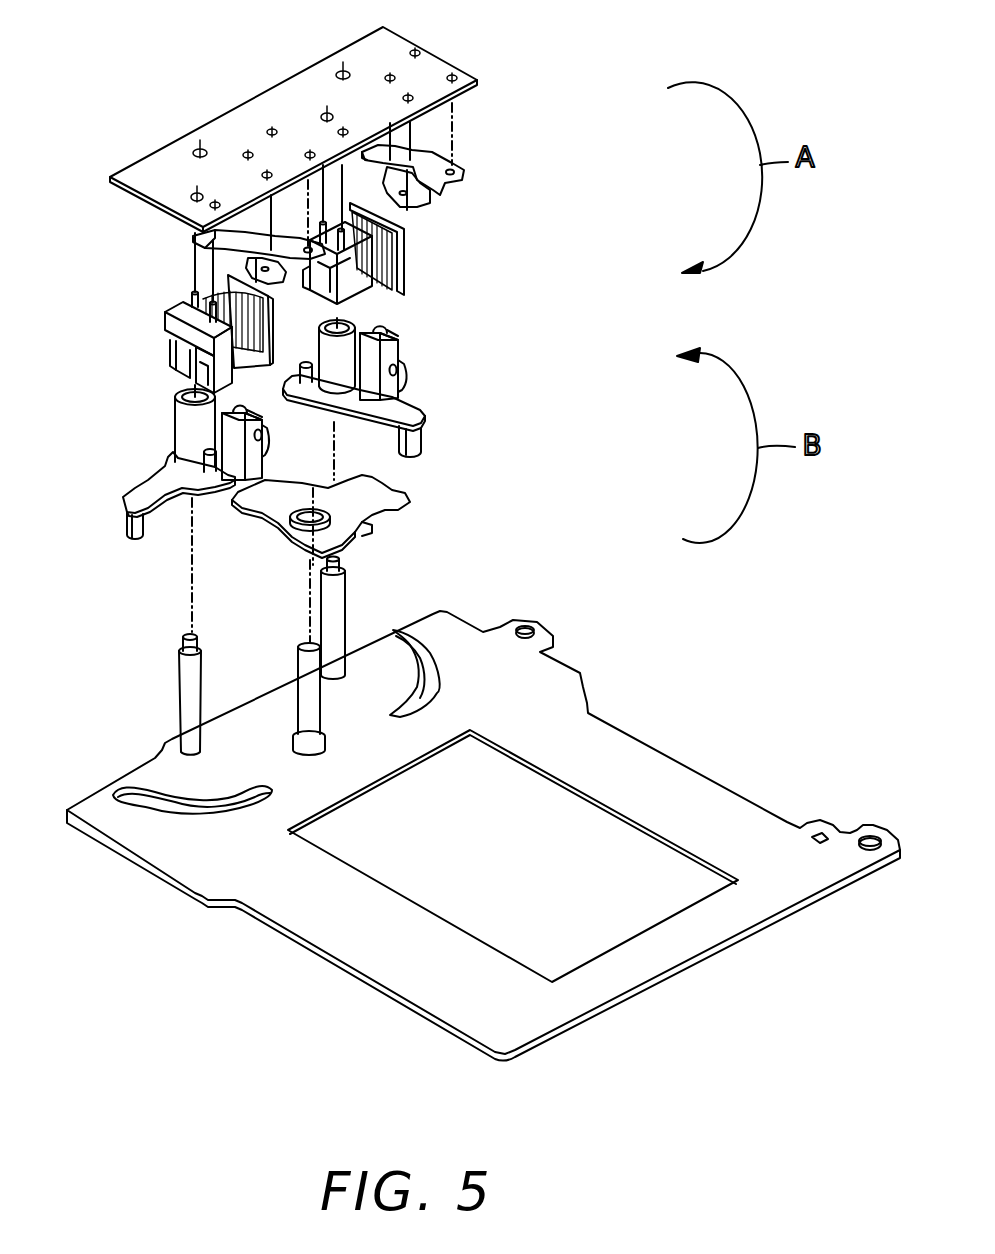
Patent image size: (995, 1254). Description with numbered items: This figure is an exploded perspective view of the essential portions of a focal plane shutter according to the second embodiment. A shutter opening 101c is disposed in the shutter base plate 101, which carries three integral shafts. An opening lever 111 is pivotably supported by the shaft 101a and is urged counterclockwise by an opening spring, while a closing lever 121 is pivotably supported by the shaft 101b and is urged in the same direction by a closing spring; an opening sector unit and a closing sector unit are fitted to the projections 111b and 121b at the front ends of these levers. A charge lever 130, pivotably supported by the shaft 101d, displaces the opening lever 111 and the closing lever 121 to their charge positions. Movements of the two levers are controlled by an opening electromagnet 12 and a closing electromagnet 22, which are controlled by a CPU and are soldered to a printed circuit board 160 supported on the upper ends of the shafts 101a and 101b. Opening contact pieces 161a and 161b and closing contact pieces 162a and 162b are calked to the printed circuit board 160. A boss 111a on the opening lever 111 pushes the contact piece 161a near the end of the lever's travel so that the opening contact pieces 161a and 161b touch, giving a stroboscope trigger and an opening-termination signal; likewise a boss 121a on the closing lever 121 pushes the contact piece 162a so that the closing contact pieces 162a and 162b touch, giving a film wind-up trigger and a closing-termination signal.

The printed circuit board 160 is at (432, 63).
The opening contact piece 161a is at (403, 193).
The opening contact piece 161b is at (447, 170).
The closing contact piece 162a is at (257, 270).
The closing contact piece 162b is at (240, 258).
The opening electromagnet 12 is at (393, 268).
The closing electromagnet 22 is at (177, 313).
The opening lever 111 is at (405, 405).
The boss 111a is at (393, 333).
The projection 111b is at (415, 443).
The closing lever 121 is at (180, 473).
The boss 121a is at (233, 412).
The projection 121b is at (130, 527).
The charge lever 130 is at (370, 490).
The shutter base plate 101 is at (588, 715).
The shaft 101a is at (330, 612).
The shaft 101b is at (188, 717).
The shutter opening 101c is at (602, 803).
The shaft 101d is at (303, 695).